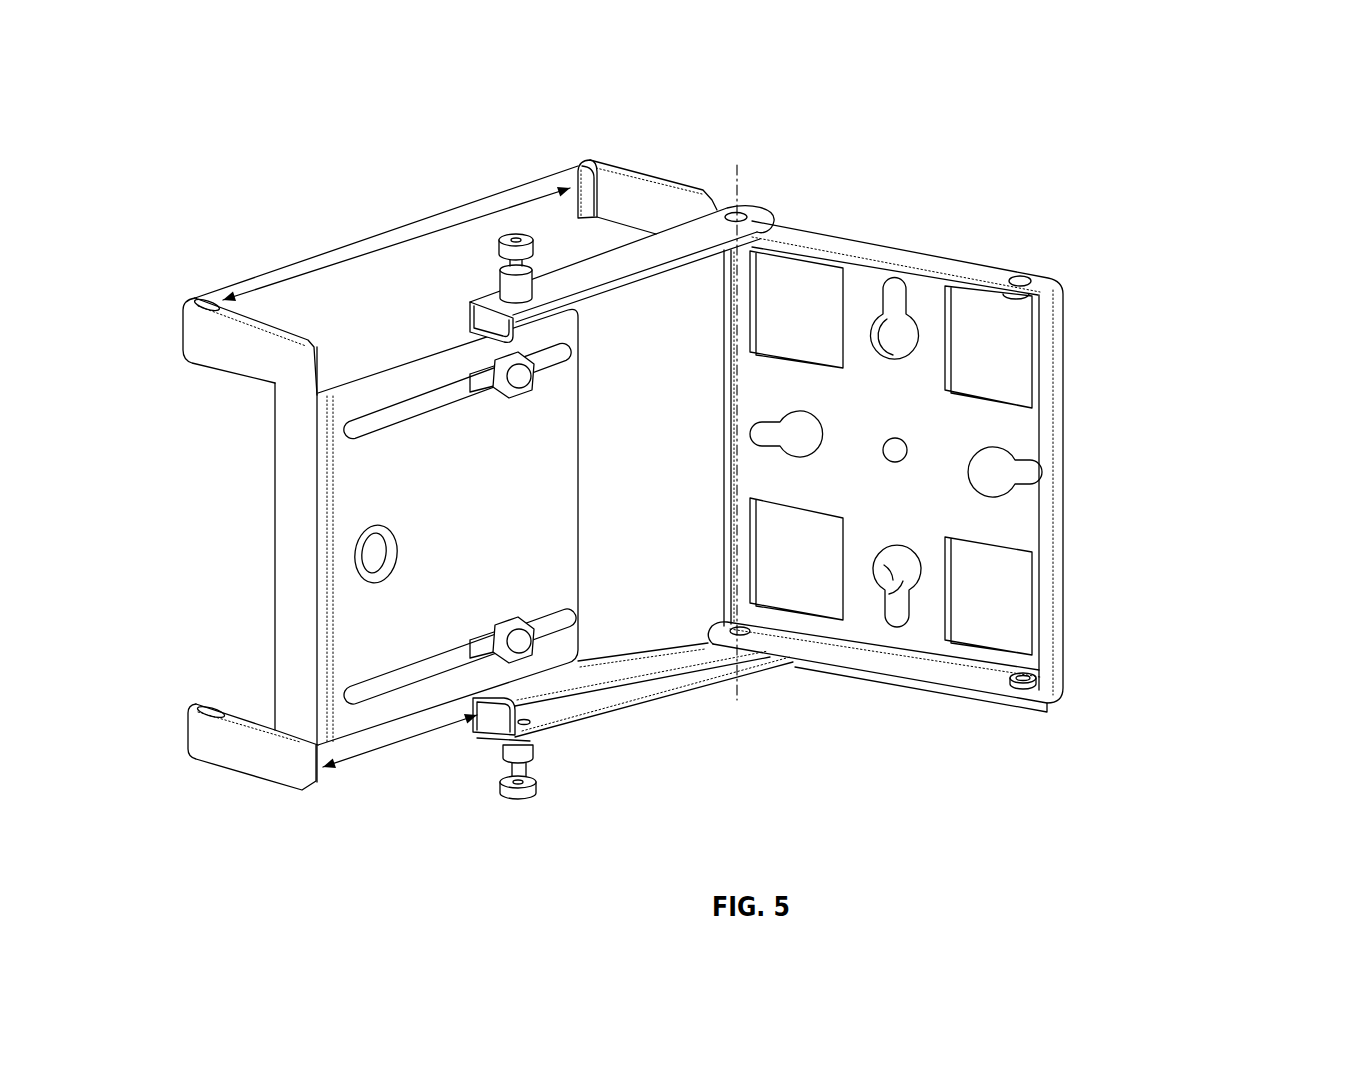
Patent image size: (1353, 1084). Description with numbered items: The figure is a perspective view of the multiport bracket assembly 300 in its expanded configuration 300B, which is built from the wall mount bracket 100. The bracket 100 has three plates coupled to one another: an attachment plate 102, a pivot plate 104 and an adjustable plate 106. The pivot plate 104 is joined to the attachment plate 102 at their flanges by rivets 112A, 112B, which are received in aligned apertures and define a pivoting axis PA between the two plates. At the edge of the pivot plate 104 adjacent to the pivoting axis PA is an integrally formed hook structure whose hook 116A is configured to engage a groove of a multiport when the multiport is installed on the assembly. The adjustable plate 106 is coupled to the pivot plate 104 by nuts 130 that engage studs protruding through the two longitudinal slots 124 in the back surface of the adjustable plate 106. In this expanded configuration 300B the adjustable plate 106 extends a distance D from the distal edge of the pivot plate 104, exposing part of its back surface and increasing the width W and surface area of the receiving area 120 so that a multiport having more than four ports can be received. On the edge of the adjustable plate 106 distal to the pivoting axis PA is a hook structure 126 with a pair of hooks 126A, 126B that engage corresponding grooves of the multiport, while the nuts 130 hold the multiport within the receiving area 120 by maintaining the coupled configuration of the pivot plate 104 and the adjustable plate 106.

The wall mount bracket 100 is at (1077, 181).
The multiport bracket assembly 300 is at (1265, 187).
The expanded configuration 300B is at (1054, 788).
The attachment plate 102 is at (1040, 434).
The pivot plate 104 is at (663, 593).
The adjustable plate 106 is at (400, 493).
The rivet 112A is at (513, 262).
The rivet 112B is at (518, 778).
The hook 116A is at (603, 198).
The receiving area 120 is at (360, 327).
The longitudinal slot 124 is at (443, 424).
The hook structure 126 is at (297, 655).
The hook 126A is at (197, 338).
The hook 126B is at (210, 735).
The nut 130 is at (523, 380).
The width W is at (365, 253).
The distance D is at (418, 743).
The pivoting axis PA is at (738, 418).